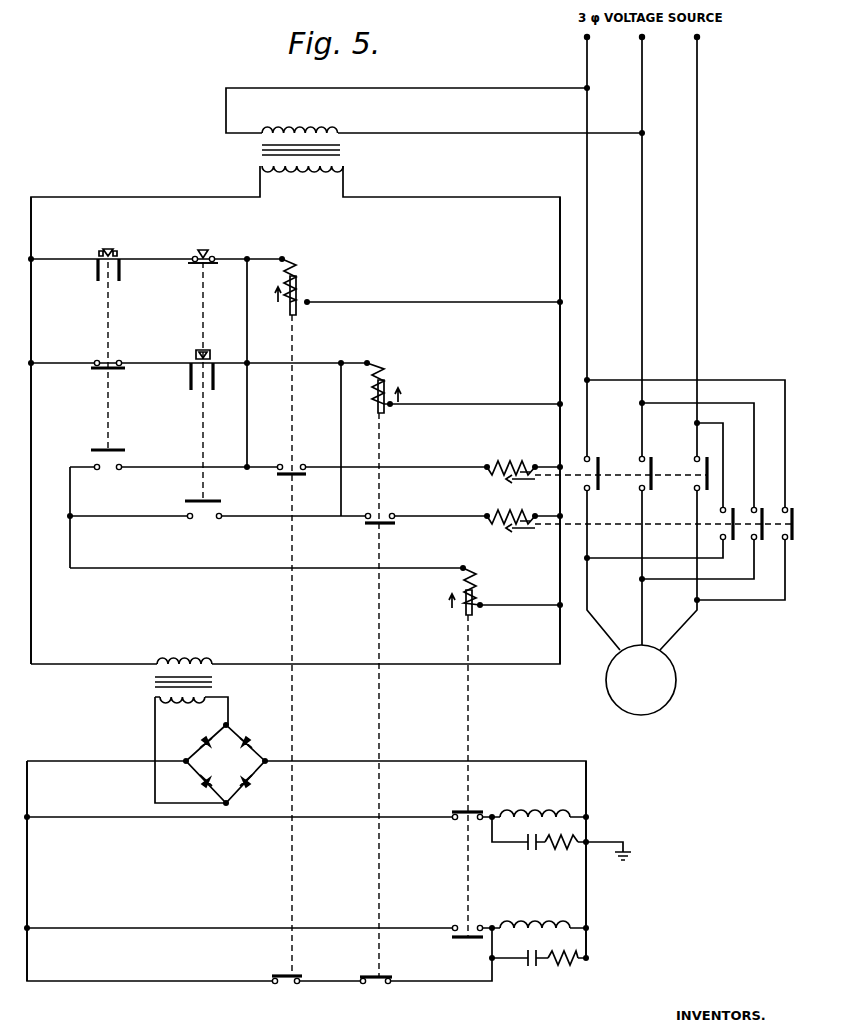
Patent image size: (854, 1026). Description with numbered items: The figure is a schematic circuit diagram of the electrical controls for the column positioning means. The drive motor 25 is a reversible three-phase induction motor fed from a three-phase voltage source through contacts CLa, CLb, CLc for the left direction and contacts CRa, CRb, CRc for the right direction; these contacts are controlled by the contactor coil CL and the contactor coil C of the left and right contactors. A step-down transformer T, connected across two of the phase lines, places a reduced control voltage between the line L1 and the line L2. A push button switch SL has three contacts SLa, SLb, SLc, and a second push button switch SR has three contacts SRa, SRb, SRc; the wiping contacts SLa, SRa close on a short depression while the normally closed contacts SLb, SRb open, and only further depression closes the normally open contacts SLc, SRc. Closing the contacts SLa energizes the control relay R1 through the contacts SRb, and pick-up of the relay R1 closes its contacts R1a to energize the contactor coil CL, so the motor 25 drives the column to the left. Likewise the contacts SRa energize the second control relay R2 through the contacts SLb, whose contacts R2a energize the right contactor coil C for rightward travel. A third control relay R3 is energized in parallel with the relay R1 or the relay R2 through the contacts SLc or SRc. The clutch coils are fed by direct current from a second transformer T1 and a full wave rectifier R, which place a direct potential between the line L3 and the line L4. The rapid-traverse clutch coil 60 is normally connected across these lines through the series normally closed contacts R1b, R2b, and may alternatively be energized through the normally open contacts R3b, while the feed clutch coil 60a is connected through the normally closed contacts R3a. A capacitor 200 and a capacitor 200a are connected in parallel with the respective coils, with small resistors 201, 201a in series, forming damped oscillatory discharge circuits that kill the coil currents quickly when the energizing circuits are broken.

The step-down transformer T is at (244, 154).
The second transformer T1 is at (140, 690).
The line L1 is at (31, 232).
The line L2 is at (560, 252).
The line L3 is at (27, 790).
The line L4 is at (586, 778).
The push button switch SL is at (124, 252).
The wiping contacts SLa is at (121, 278).
The normally closed contacts SLb is at (118, 372).
The normally open contacts SLc is at (113, 449).
The second push button switch SR is at (208, 254).
The wiping contacts SRa is at (216, 388).
The normally closed contacts SRb is at (210, 268).
The normally open contacts SRc is at (192, 498).
The control relay R1 is at (304, 276).
The normally open contacts R1a is at (278, 480).
The normally closed contacts R1b is at (288, 986).
The second control relay R2 is at (390, 384).
The normally open contacts R2a is at (366, 528).
The normally closed contacts R2b is at (378, 986).
The third control relay R3 is at (480, 583).
The normally closed contacts R3a is at (460, 824).
The normally open contacts R3b is at (455, 944).
The contactor coil CL is at (510, 463).
The contactor contact CLa is at (612, 448).
The contactor contact CLb is at (653, 462).
The contactor contact CLc is at (705, 479).
The contactor coil C is at (507, 513).
The contactor contact CRa is at (734, 543).
The contactor contact CRb is at (763, 543).
The contactor contact CRc is at (793, 543).
The drive motor 25 is at (677, 680).
The full wave rectifier R is at (240, 738).
The clutch coil 60 is at (524, 920).
The clutch coil 60a is at (532, 808).
The capacitor 200 is at (538, 966).
The capacitor 200a is at (536, 852).
The resistor 201 is at (566, 952).
The resistor 201a is at (566, 836).